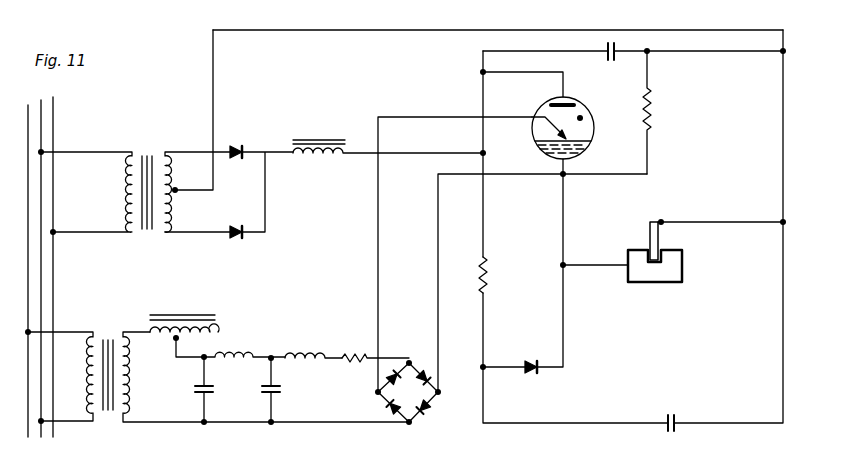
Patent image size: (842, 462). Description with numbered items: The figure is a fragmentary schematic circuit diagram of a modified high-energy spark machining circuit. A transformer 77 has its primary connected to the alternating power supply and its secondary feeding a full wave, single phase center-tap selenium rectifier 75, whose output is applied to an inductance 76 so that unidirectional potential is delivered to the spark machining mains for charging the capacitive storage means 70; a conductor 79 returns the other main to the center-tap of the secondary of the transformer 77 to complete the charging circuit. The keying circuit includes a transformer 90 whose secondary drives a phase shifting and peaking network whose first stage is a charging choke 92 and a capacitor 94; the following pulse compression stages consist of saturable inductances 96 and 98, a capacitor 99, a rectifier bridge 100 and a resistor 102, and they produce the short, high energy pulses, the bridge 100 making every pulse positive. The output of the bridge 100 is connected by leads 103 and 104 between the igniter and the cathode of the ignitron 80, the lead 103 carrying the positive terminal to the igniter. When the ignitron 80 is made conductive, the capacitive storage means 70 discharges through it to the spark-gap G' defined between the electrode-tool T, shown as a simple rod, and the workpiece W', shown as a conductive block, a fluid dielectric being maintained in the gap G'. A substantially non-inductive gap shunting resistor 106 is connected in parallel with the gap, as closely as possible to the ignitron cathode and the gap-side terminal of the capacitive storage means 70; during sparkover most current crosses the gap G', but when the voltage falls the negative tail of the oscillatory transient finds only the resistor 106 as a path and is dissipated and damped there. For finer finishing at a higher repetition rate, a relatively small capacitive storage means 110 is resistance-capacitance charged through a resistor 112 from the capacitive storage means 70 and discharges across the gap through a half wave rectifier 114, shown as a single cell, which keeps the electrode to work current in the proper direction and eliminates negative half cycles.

The capacitive storage means 70 is at (604, 62).
The rectifier 75 is at (238, 149).
The inductance 76 is at (318, 160).
The transformer 77 is at (145, 148).
The conductor 79 is at (335, 33).
The ignitron 80 is at (584, 106).
The transformer 90 is at (106, 330).
The charging choke 92 is at (191, 324).
The capacitor 94 is at (214, 390).
The saturable inductance 96 is at (224, 353).
The saturable inductance 98 is at (298, 353).
The capacitor 99 is at (282, 390).
The rectifier bridge 100 is at (423, 400).
The resistor 102 is at (353, 356).
The lead 103 is at (378, 288).
The lead 104 is at (438, 244).
The gap shunting resistor 106 is at (651, 103).
The capacitive storage means 110 is at (679, 412).
The resistor 112 is at (489, 278).
The half wave rectifier 114 is at (533, 358).
The spark-gap G' is at (636, 239).
The electrode-tool T is at (662, 240).
The workpiece W' is at (661, 283).